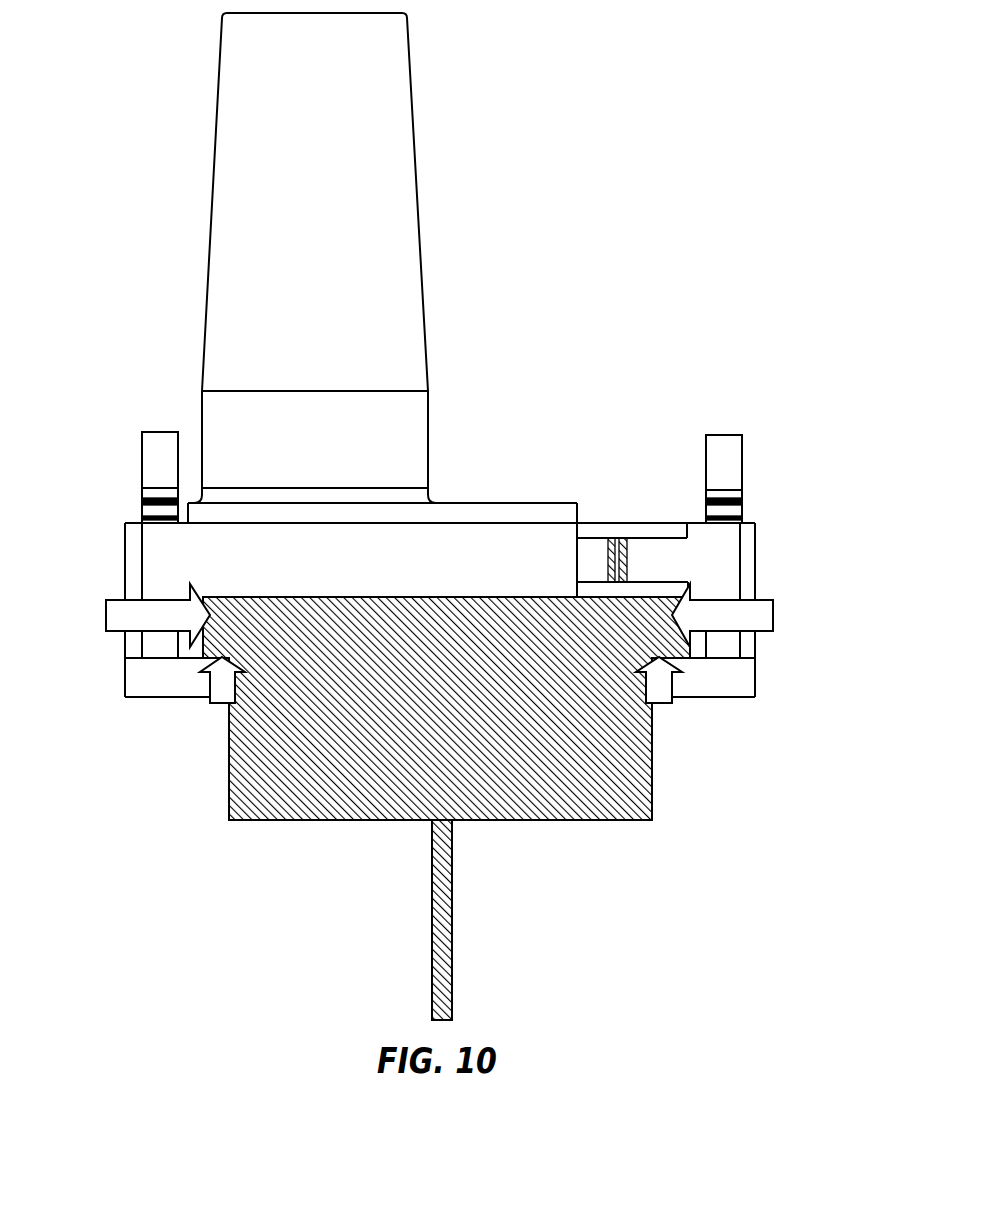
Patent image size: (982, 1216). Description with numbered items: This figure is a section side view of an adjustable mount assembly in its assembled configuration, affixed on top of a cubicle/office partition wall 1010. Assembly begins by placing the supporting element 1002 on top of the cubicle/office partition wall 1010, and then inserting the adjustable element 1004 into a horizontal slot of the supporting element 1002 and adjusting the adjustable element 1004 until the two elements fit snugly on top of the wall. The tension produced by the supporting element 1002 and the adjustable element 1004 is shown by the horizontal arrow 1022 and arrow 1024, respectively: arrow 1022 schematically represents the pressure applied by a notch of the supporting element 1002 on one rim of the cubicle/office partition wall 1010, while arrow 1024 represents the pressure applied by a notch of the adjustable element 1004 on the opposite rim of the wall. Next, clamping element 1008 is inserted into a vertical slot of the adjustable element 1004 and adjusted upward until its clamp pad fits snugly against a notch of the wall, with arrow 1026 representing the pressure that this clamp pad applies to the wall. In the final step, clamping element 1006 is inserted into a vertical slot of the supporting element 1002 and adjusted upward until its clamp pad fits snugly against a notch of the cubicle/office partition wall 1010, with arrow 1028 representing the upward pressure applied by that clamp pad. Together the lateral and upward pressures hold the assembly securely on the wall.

The supporting element 1002 is at (477, 503).
The adjustable element 1004 is at (666, 523).
The clamping element 1006 is at (142, 460).
The clamping element 1008 is at (735, 473).
The cubicle/office partition wall 1010 is at (452, 932).
The arrow 1022 is at (116, 599).
The arrow 1024 is at (762, 598).
The arrow 1026 is at (672, 705).
The arrow 1028 is at (210, 705).